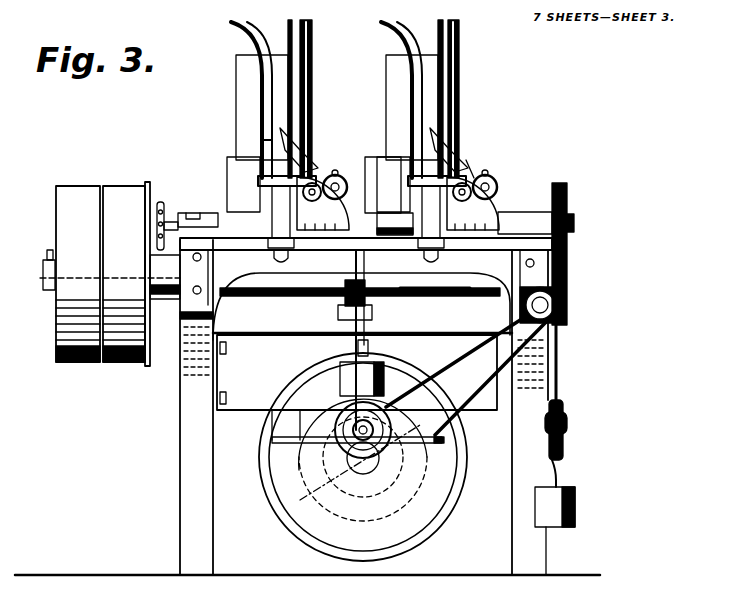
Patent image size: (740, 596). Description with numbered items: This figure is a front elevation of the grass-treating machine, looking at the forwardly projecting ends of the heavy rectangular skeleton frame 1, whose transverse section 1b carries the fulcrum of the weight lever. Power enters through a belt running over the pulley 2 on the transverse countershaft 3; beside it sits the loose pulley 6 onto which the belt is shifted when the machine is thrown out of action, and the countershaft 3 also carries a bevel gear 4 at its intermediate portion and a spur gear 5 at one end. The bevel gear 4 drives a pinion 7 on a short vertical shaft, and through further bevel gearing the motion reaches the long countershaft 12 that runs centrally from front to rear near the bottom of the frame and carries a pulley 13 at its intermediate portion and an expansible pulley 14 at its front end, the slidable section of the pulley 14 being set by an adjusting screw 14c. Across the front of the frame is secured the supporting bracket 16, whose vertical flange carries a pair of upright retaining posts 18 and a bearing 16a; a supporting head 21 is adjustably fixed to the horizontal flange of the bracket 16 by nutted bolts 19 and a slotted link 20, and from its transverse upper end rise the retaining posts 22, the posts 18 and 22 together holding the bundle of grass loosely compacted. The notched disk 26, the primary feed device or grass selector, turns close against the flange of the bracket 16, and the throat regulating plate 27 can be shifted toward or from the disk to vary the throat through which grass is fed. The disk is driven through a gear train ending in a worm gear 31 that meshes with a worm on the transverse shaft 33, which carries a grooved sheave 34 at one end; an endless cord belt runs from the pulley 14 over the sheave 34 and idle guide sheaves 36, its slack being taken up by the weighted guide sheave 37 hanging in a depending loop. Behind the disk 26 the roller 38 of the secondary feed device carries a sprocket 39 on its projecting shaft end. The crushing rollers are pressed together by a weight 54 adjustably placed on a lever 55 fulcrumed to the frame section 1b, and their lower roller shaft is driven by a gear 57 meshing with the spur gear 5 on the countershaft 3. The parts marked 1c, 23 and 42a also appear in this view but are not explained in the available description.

The skeleton frame 1 is at (180, 433).
The transverse section of the frame 1b is at (357, 372).
The wheel rim 1c is at (332, 407).
The pulley 2 is at (126, 363).
The countershaft 3 is at (43, 278).
The bevel gear 4 is at (310, 310).
The spur gear 5 is at (566, 305).
The loose pulley 6 is at (74, 363).
The pinion 7 is at (392, 308).
The long countershaft 12 is at (350, 465).
The pulley 13 is at (455, 490).
The expansible pulley 14 is at (408, 498).
The adjusting screw 14c is at (443, 440).
The supporting bracket 16 is at (444, 292).
The bearing 16a is at (344, 178).
The upright retaining posts 18 is at (232, 28).
The nutted bolts 19 is at (398, 225).
The slotted link 20 is at (278, 250).
The supporting head 21 is at (440, 238).
The upright retaining posts 22 is at (393, 99).
The magazine 23 is at (236, 97).
The notched disk 26 is at (374, 114).
The throat regulating plate 27 is at (258, 140).
The worm gear 31 is at (475, 160).
The transverse shaft 33 is at (576, 222).
The grooved sheave 34 is at (552, 200).
The idle guide sheaves 36 is at (522, 305).
The weighted guide sheave 37 is at (565, 412).
The roller 38 is at (170, 222).
The sprocket 39 is at (161, 202).
The block 42a is at (305, 132).
The weight 54 is at (386, 370).
The lever 55 is at (372, 348).
The gear 57 is at (560, 188).